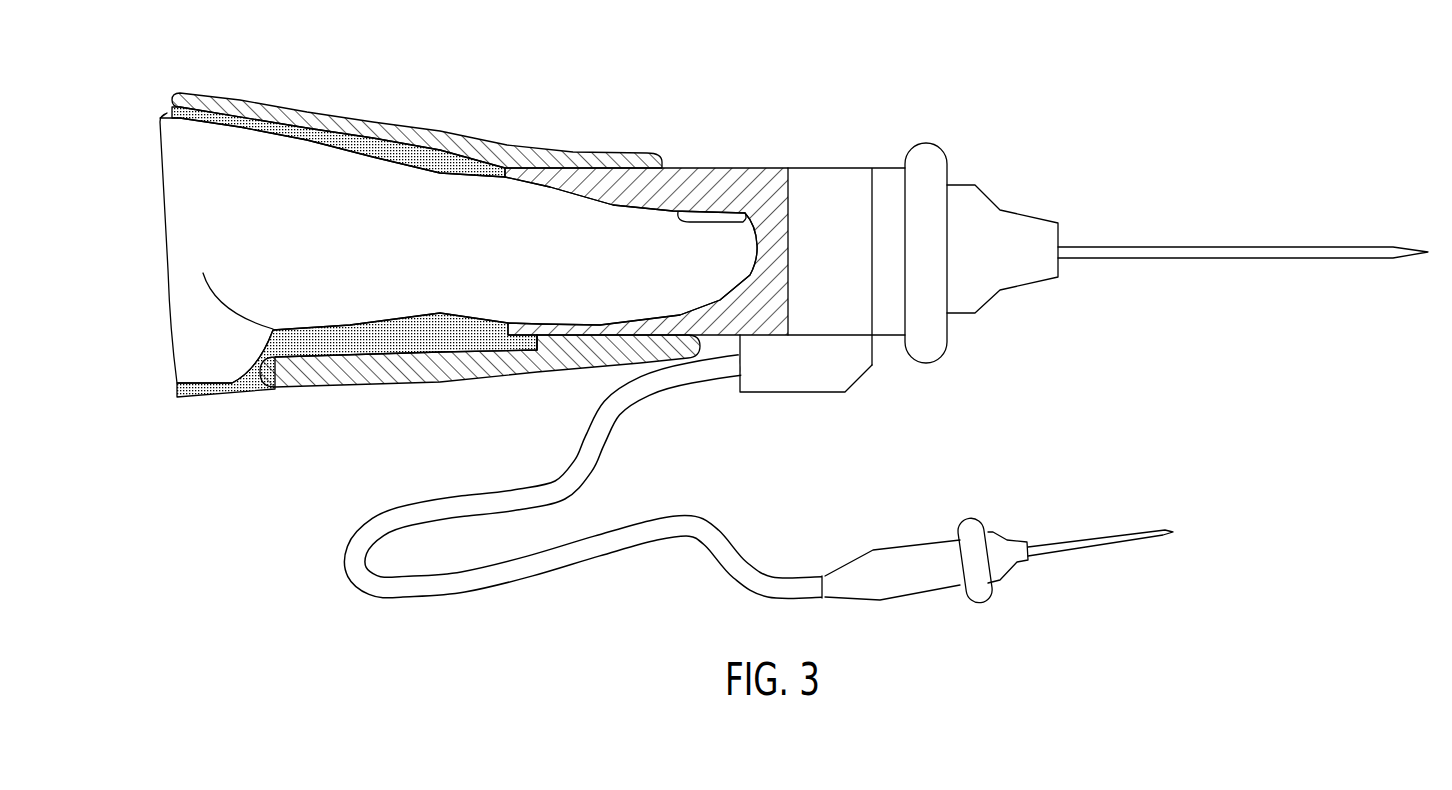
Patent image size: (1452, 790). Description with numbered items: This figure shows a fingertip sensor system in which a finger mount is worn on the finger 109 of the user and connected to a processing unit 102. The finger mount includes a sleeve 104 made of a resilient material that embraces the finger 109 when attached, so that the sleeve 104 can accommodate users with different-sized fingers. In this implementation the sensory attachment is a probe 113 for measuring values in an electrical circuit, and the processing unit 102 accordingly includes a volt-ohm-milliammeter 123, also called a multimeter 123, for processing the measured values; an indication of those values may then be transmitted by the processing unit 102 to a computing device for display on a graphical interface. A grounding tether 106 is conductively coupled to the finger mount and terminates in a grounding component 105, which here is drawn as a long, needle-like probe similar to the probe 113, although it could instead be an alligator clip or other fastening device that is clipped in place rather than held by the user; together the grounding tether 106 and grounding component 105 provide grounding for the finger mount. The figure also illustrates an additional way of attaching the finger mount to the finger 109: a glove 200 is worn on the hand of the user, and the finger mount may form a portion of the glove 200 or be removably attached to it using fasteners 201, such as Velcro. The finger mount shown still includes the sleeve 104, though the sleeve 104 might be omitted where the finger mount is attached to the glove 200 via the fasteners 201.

The processing unit 102 is at (788, 125).
The sleeve 104 is at (693, 176).
The grounding component 105 is at (1060, 552).
The grounding tether 106 is at (593, 432).
The finger 109 is at (185, 262).
The probe 113 is at (1135, 245).
The volt-ohm-milliammeter 123 is at (840, 315).
The glove 200 is at (176, 108).
The fasteners 201 is at (403, 136).